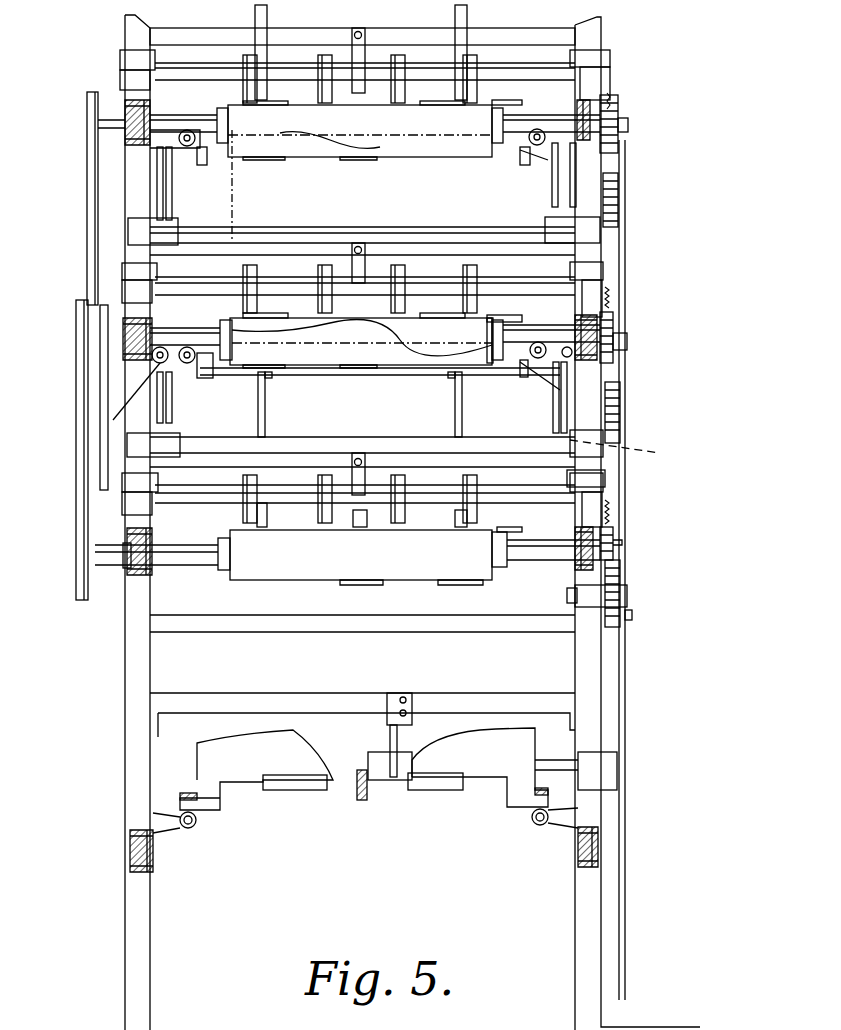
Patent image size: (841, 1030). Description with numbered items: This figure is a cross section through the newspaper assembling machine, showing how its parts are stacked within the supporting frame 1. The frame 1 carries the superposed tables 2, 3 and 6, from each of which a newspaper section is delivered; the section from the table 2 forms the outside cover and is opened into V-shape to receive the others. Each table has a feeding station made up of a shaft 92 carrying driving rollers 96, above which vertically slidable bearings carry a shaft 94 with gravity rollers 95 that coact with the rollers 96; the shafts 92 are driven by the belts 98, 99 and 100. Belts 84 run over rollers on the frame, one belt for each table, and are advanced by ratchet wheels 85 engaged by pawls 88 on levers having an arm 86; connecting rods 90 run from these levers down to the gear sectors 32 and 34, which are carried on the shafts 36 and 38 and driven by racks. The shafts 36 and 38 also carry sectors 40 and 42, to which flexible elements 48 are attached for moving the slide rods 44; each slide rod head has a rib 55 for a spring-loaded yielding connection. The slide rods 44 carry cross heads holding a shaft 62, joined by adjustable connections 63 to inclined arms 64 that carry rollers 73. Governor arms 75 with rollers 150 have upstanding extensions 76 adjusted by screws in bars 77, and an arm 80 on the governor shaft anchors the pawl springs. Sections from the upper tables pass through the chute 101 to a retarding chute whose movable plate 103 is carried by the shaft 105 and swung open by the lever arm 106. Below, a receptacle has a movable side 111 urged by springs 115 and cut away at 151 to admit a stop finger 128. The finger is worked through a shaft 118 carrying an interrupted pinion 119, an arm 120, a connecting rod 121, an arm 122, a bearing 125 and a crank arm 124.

The supporting frame 1 is at (600, 937).
The table 2 is at (517, 530).
The table 3 is at (507, 321).
The table 6 is at (506, 107).
The gear sector 32 is at (618, 200).
The gear sector 34 is at (620, 420).
The shaft 36 is at (520, 230).
The shaft 38 is at (495, 438).
The sector 40 is at (172, 205).
The sector 42 is at (553, 405).
The slide rod 44 is at (190, 130).
The flexible element 48 is at (113, 420).
The rib 55 is at (172, 128).
The shaft 62 is at (340, 376).
The adjustable connection 63 is at (258, 385).
The inclined arm 64 is at (267, 20).
The roller 73 is at (262, 527).
The governor arm 75 is at (355, 245).
The upstanding extension 76 is at (360, 32).
The bar 77 is at (400, 36).
The arm 80 is at (612, 292).
The belt 84 is at (275, 105).
The ratchet wheel 85 is at (628, 126).
The arm 86 is at (618, 112).
The pawl 88 is at (612, 96).
The connecting rod 90 is at (626, 168).
The shaft 92 is at (225, 130).
The shaft 94 is at (212, 78).
The gravity roller 95 is at (257, 75).
The driving roller 96 is at (325, 590).
The belt 98 is at (115, 392).
The belt 99 is at (85, 495).
The belt 100 is at (87, 240).
The chute 101 is at (388, 145).
The plate 103 is at (372, 340).
The shaft 105 is at (488, 355).
The lever arm 106 is at (633, 452).
The movable side 111 is at (513, 740).
The spring 115 is at (190, 828).
The shaft 118 is at (567, 596).
The interrupted pinion 119 is at (632, 613).
The arm 120 is at (620, 585).
The connecting rod 121 is at (626, 680).
The arm 122 is at (617, 768).
The crank arm 124 is at (362, 800).
The bearing 125 is at (397, 740).
The stop finger 128 is at (308, 790).
The roller 150 is at (370, 322).
The cut-away 151 is at (248, 783).